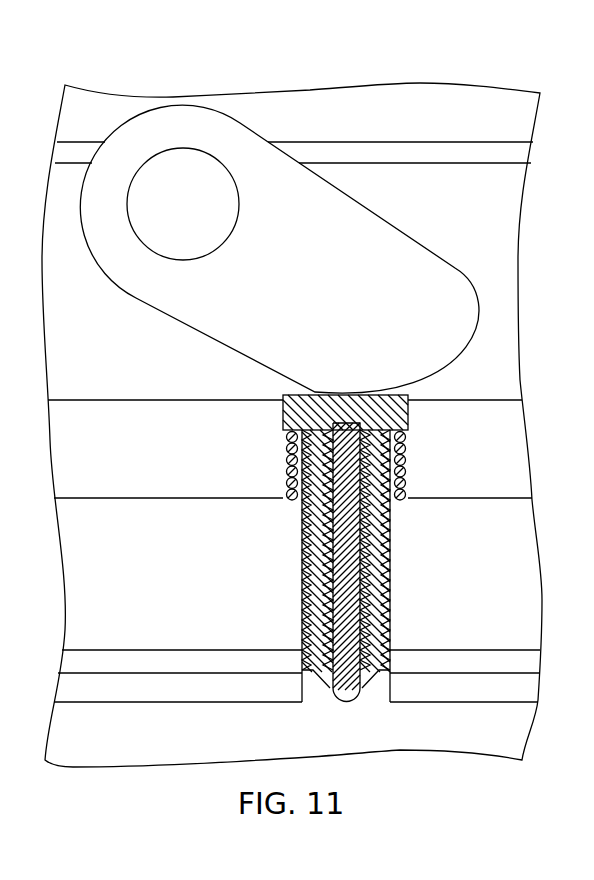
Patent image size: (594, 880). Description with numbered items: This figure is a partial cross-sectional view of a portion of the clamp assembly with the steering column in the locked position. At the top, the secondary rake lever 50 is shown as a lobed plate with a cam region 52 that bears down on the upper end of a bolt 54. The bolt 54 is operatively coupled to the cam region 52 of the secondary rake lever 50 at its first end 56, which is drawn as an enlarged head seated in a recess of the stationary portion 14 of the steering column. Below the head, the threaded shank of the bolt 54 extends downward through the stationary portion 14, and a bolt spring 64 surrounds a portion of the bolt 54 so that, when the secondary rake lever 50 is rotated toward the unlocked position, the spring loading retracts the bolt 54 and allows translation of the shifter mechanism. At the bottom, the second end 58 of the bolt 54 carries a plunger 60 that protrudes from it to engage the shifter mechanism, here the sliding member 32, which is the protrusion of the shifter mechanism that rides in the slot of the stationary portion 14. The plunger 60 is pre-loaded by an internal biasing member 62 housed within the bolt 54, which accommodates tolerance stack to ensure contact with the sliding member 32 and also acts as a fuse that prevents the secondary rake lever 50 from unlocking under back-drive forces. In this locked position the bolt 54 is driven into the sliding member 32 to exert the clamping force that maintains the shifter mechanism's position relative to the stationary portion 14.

The stationary portion 14 is at (468, 100).
The sliding member 32 is at (108, 748).
The secondary rake lever 50 is at (388, 245).
The cam region 52 is at (455, 383).
The bolt 54 is at (380, 545).
The first end 56 is at (283, 413).
The second end 58 is at (308, 668).
The plunger 60 is at (355, 697).
The internal biasing member 62 is at (345, 600).
The bolt spring 64 is at (408, 485).